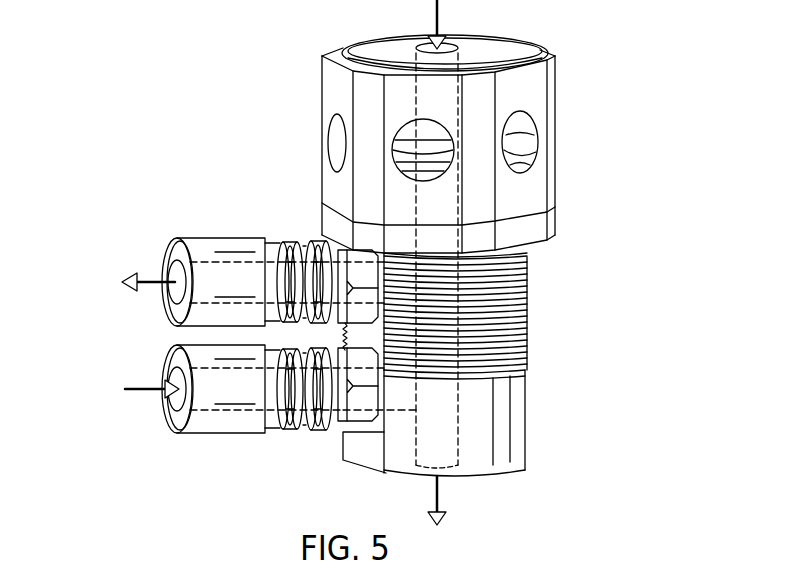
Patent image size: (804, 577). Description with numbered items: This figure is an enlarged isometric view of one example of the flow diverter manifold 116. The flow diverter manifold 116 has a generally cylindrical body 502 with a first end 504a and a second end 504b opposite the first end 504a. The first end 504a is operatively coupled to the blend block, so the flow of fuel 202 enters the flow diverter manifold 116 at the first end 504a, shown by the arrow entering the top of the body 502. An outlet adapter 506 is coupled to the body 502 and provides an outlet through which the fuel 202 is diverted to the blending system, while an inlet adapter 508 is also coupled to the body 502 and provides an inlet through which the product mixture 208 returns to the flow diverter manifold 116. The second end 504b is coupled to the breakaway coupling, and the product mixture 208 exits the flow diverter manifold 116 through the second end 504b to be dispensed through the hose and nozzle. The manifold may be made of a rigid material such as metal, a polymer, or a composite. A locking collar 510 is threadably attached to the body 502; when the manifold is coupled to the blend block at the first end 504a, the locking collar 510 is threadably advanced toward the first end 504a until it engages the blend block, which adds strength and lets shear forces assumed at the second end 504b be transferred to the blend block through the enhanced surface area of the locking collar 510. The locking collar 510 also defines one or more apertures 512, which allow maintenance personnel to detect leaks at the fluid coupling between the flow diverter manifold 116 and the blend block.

The flow diverter manifold 116 is at (108, 50).
The fuel 202 is at (440, 20).
The product mixture 208 is at (440, 496).
The body 502 is at (529, 382).
The first end 504a is at (553, 50).
The second end 504b is at (529, 460).
The outlet adapter 506 is at (213, 250).
The inlet adapter 508 is at (212, 430).
The locking collar 510 is at (553, 207).
The apertures 512 is at (333, 130).